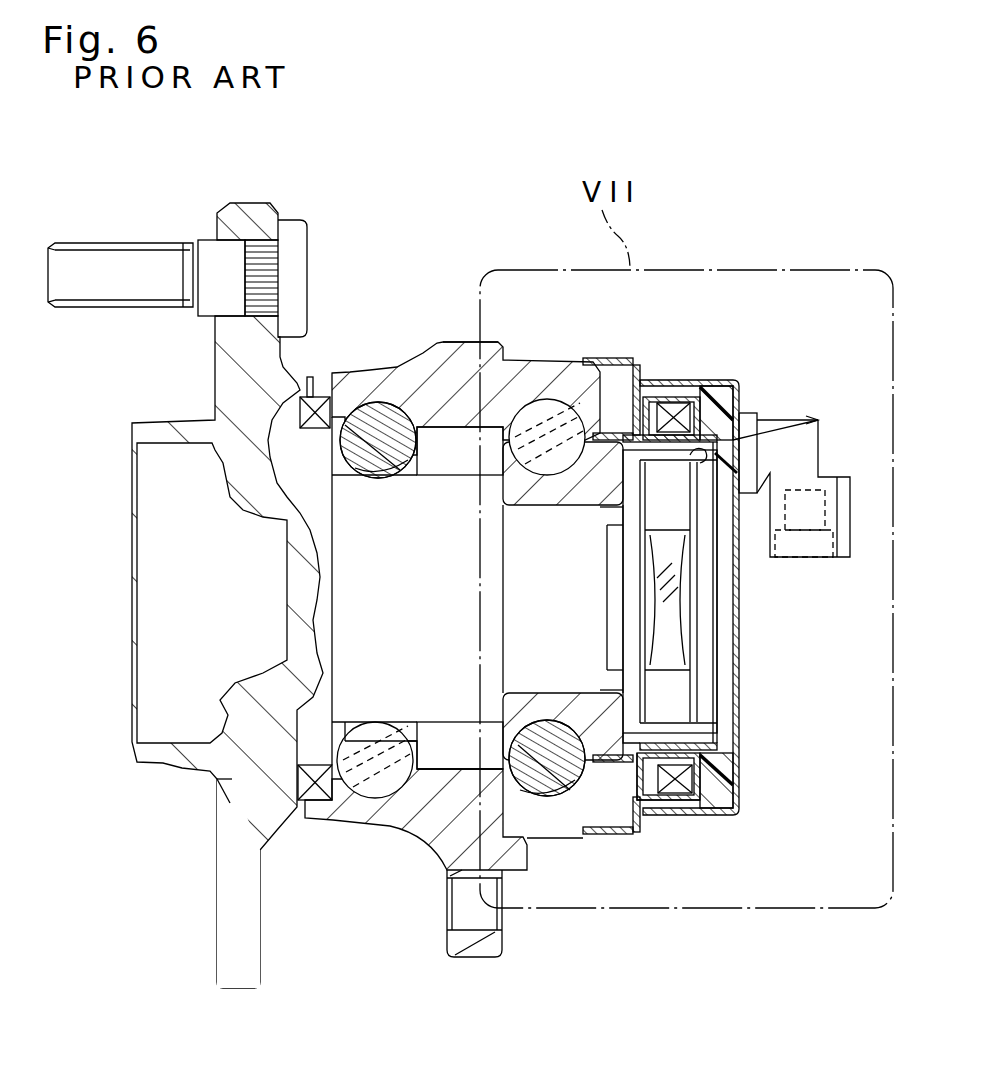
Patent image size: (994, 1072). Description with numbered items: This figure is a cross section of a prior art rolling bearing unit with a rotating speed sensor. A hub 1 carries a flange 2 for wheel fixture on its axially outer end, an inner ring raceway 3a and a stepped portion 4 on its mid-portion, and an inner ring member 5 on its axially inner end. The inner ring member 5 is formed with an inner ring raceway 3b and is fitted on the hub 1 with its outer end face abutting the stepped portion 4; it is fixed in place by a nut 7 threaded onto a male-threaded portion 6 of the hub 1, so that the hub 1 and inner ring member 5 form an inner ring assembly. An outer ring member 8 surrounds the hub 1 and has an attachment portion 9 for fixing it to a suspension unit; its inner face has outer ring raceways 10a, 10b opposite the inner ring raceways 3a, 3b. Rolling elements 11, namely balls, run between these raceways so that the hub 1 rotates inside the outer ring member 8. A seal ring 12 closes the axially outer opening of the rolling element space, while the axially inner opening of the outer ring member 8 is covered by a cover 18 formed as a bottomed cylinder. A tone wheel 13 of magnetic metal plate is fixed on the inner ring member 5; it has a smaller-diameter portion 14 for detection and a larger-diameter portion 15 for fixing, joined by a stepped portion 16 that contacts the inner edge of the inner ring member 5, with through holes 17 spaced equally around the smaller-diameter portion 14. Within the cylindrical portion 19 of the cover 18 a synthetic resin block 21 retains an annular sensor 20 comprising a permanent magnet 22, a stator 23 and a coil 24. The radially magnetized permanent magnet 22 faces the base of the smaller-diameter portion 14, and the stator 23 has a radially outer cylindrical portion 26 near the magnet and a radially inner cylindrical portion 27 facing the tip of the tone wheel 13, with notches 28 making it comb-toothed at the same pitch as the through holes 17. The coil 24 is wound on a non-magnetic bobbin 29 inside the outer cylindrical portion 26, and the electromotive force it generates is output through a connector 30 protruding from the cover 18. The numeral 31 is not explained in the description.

The hub 1 is at (347, 607).
The flange 2 is at (228, 387).
The inner ring raceway 3a is at (350, 747).
The inner ring raceway 3b is at (550, 475).
The stepped portion 4 is at (453, 360).
The inner ring member 5 is at (570, 503).
The male-threaded portion 6 is at (617, 610).
The nut 7 is at (687, 600).
The outer ring member 8 is at (560, 398).
The attachment portion 9 is at (473, 953).
The outer ring raceway 10a is at (378, 800).
The outer ring raceway 10b is at (558, 795).
The rolling elements 11 is at (390, 397).
The seal ring 12 is at (318, 383).
The tone wheel 13 is at (690, 742).
The smaller-diameter portion 14 is at (687, 737).
The larger-diameter portion 15 is at (590, 818).
The stepped portion 16 is at (588, 358).
The through holes 17 is at (820, 420).
The cover 18 is at (740, 668).
The cylindrical portion 19 is at (712, 385).
The sensor 20 is at (675, 805).
The synthetic resin block 21 is at (700, 420).
The permanent magnet 22 is at (636, 378).
The stator 23 is at (707, 805).
The coil 24 is at (733, 385).
The radially outer cylindrical portion 26 is at (674, 400).
The radially inner cylindrical portion 27 is at (703, 753).
The notches 28 is at (738, 545).
The bobbin 29 is at (697, 783).
The connector 30 is at (797, 463).
The ball groove 31 is at (375, 445).